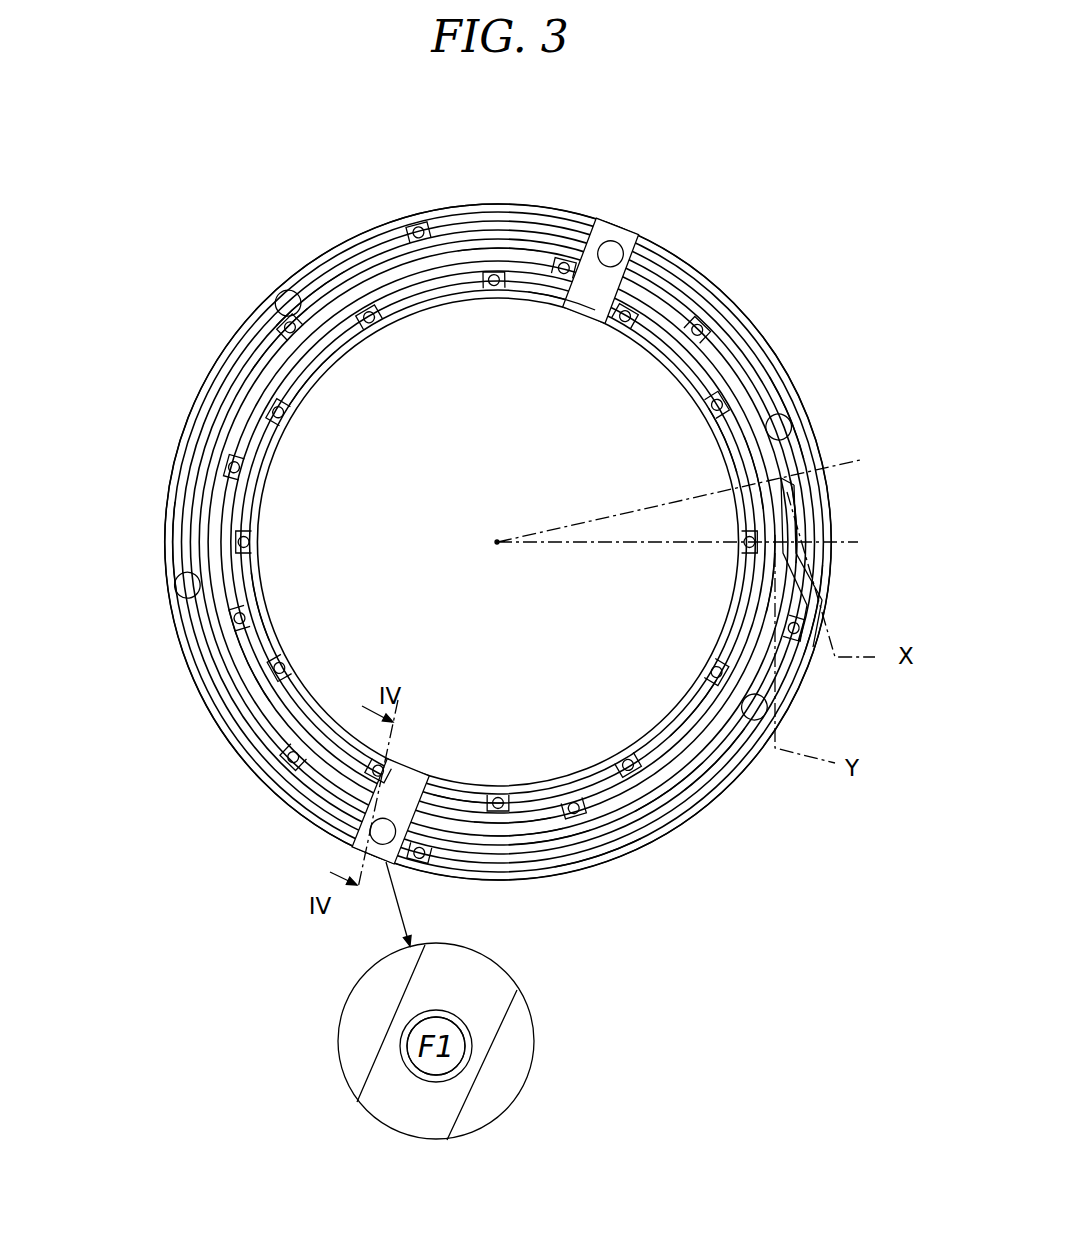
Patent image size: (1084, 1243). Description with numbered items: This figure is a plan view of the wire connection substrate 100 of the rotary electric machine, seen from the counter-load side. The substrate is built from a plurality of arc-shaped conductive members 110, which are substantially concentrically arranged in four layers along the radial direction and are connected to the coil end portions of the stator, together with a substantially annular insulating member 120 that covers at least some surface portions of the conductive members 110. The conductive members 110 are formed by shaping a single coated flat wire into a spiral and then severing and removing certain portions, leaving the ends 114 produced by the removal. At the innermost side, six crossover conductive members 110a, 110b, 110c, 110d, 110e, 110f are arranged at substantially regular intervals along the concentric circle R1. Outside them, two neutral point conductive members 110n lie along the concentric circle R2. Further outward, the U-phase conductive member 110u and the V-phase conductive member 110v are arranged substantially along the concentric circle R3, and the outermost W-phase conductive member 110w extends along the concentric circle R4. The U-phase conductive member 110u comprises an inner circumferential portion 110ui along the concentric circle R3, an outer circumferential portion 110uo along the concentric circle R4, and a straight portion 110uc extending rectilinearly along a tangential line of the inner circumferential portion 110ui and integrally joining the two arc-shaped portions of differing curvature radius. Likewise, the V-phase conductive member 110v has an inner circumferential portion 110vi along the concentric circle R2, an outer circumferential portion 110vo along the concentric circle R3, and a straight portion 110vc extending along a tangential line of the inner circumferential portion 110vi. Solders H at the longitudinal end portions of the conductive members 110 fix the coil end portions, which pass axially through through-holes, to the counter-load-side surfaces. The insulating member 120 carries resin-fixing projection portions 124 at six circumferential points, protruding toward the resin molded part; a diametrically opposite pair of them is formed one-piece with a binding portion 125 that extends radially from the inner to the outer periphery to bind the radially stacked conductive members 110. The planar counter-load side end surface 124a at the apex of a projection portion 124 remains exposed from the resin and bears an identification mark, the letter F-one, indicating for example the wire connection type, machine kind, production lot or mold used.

The wire connection substrate 100 is at (810, 200).
The conductive members 110 is at (744, 340).
The crossover conductive member 110a is at (565, 300).
The crossover conductive member 110b is at (727, 440).
The crossover conductive member 110c is at (702, 712).
The crossover conductive member 110d is at (468, 802).
The crossover conductive member 110e is at (252, 608).
The crossover conductive member 110f is at (307, 377).
The neutral point conductive member 110n is at (497, 245).
The U-phase conductive member 110u is at (306, 300).
The inner circumferential portion 110ui is at (805, 410).
The straight portion 110uc is at (792, 522).
The outer circumferential portion 110uo is at (822, 612).
The V-phase conductive member 110v is at (678, 793).
The inner circumferential portion 110vi is at (758, 473).
The straight portion 110vc is at (780, 574).
The outer circumferential portion 110vo is at (718, 760).
The W-phase conductive member 110w is at (170, 546).
The ends 114 is at (273, 337).
The insulating member 120 is at (812, 672).
The projection portions 124 is at (273, 296).
The counter-load side end surface 124a is at (272, 306).
The binding portion 125 is at (590, 298).
The solder H is at (418, 226).
The concentric circle R1 is at (485, 828).
The concentric circle R2 is at (522, 836).
The concentric circle R3 is at (558, 842).
The concentric circle R4 is at (605, 854).